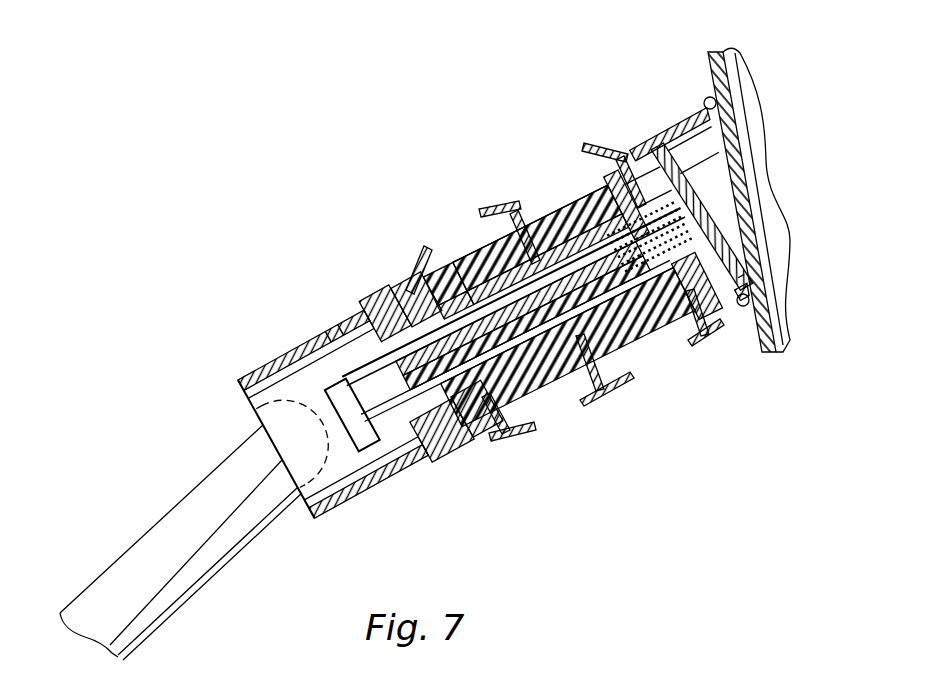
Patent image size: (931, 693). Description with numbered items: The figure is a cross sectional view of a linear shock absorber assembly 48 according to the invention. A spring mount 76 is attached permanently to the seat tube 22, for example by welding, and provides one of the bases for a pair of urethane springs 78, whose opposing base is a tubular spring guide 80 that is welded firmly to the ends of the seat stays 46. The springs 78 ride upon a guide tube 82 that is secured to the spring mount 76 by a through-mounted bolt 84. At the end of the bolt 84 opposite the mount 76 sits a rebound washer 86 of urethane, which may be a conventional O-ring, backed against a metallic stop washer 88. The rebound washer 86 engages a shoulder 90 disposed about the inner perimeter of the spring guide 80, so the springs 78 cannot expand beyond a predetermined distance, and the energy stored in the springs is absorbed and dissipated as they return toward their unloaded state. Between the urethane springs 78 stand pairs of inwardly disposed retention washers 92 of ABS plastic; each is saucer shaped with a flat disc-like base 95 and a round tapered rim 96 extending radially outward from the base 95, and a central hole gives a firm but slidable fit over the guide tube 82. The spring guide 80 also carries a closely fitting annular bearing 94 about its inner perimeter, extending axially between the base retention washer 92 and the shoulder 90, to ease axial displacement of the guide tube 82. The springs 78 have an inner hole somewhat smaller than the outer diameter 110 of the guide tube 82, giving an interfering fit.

The seat tube 22 is at (715, 82).
The seat stays 46 is at (190, 582).
The assembly 48 is at (513, 163).
The spring mount 76 is at (668, 122).
The urethane springs 78 is at (556, 396).
The tubular spring guide 80 is at (320, 522).
The guide tube 82 is at (470, 258).
The bolt 84 is at (363, 442).
The rebound washer 86 is at (430, 442).
The stop washer 88 is at (335, 333).
The shoulder 90 is at (375, 328).
The retention washers 92 is at (521, 442).
The annular bearing 94 is at (400, 298).
The base 95 is at (648, 163).
The rim 96 is at (598, 148).
The outer diameter 110 is at (450, 278).